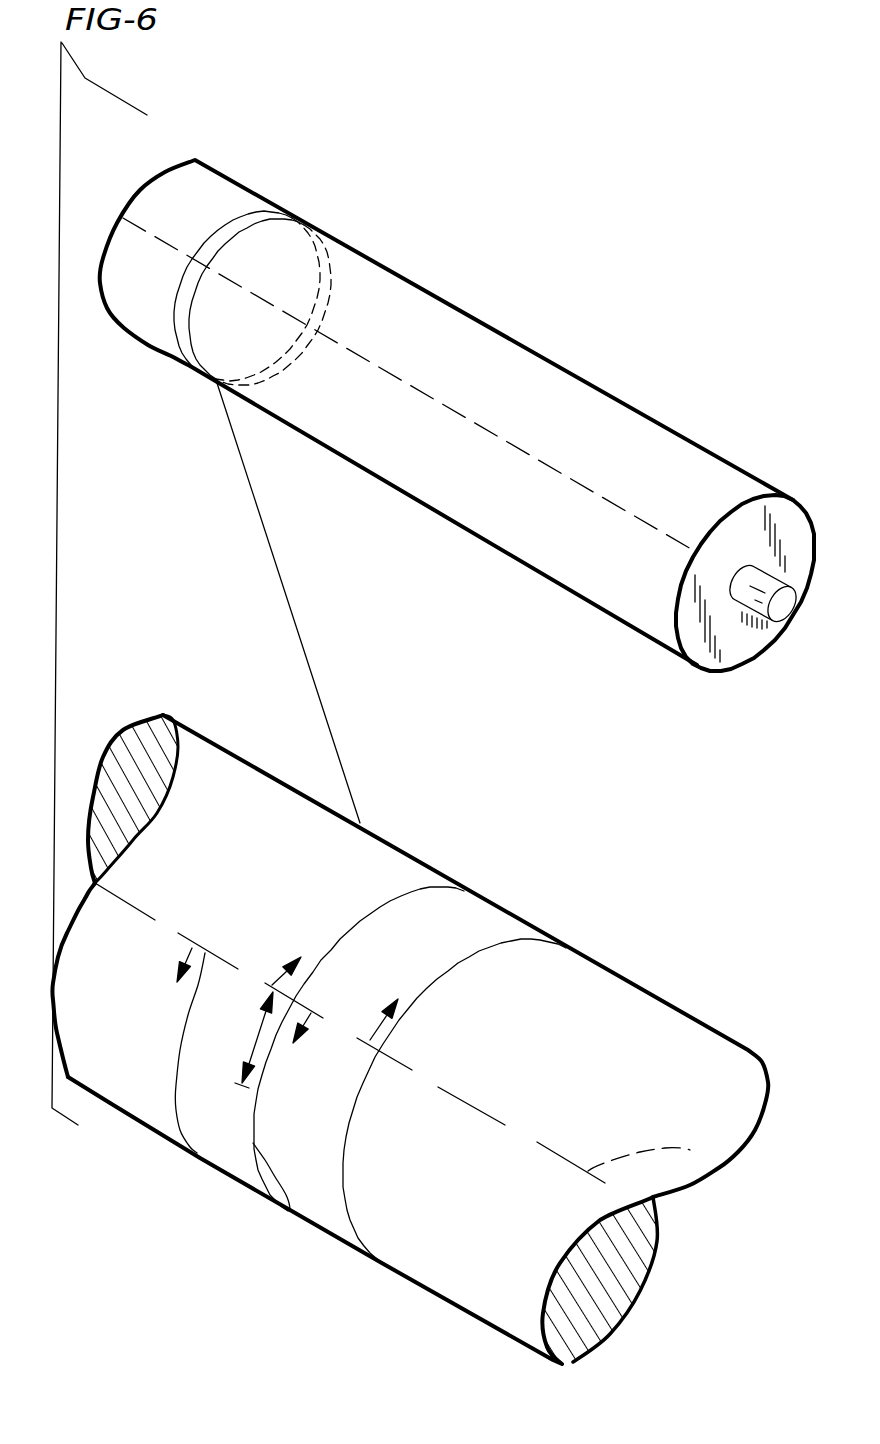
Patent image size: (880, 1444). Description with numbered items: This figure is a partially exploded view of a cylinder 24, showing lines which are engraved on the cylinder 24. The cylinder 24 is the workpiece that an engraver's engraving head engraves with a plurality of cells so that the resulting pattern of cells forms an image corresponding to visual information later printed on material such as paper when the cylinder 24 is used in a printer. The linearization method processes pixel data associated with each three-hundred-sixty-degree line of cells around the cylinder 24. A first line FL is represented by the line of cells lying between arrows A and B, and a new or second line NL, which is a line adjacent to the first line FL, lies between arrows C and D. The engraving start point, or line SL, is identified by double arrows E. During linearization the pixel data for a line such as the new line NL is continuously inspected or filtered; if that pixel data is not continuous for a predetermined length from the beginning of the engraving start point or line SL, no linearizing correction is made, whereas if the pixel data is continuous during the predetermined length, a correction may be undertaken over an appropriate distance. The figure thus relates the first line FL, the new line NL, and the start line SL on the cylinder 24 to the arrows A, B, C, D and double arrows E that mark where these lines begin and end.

The cylinder 24 is at (793, 498).
The engraving start point line SL is at (150, 233).
The first line FL is at (177, 1128).
The new or second line NL is at (292, 1213).
The arrow A is at (192, 948).
The arrow B is at (284, 983).
The arrow C is at (311, 1013).
The arrow D is at (454, 1101).
The double arrows E is at (257, 1035).